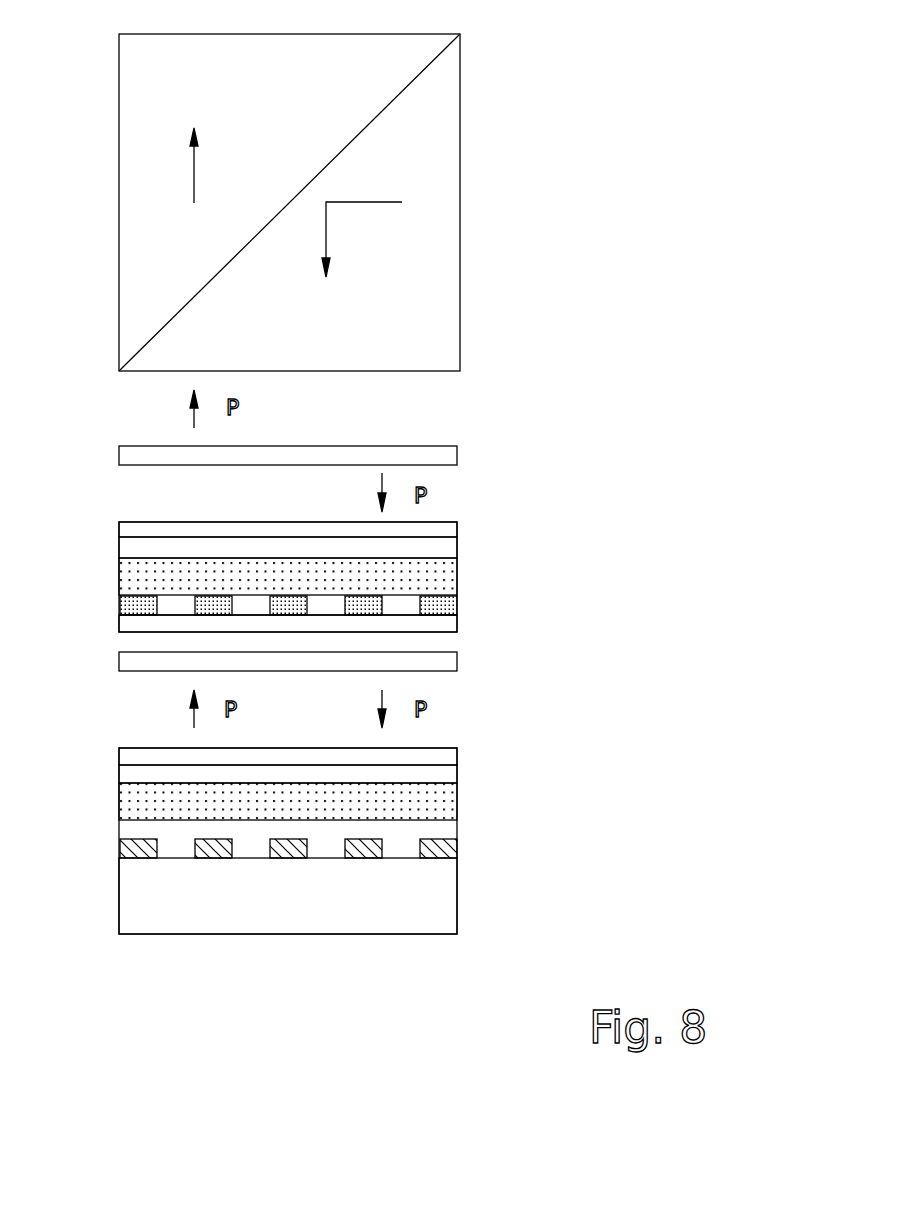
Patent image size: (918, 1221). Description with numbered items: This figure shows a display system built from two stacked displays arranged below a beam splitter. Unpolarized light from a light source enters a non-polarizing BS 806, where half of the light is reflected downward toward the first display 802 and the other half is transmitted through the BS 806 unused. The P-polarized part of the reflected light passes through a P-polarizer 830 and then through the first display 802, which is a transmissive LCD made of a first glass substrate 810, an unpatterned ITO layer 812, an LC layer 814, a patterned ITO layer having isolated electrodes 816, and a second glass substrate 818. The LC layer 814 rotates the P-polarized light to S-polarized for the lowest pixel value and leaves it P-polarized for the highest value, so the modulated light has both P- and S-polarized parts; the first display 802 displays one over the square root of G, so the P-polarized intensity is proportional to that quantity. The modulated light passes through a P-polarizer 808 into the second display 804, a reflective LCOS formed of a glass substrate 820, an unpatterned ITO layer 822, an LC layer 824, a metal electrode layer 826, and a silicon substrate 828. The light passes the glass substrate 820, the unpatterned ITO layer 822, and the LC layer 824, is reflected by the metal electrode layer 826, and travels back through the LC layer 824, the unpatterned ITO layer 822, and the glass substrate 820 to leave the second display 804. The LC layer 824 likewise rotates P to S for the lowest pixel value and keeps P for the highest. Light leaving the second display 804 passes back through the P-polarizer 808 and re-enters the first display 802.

The first display 802 is at (92, 559).
The second display 804 is at (93, 827).
The non-polarizing BS 806 is at (364, 84).
The P-polarizer 808 is at (475, 661).
The first glass substrate 810 is at (472, 527).
The unpatterned ITO layer 812 is at (475, 548).
The LC layer 814 is at (475, 577).
The isolated electrodes 816 is at (475, 605).
The second glass substrate 818 is at (475, 623).
The glass substrate 820 is at (472, 755).
The unpatterned ITO layer 822 is at (472, 774).
The LC layer 824 is at (472, 802).
The metal electrode layer 826 is at (472, 848).
The silicon substrate 828 is at (421, 913).
The P-polarizer 830 is at (138, 445).